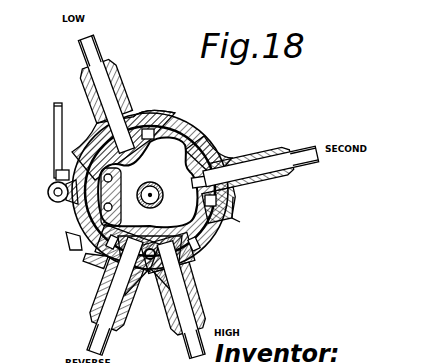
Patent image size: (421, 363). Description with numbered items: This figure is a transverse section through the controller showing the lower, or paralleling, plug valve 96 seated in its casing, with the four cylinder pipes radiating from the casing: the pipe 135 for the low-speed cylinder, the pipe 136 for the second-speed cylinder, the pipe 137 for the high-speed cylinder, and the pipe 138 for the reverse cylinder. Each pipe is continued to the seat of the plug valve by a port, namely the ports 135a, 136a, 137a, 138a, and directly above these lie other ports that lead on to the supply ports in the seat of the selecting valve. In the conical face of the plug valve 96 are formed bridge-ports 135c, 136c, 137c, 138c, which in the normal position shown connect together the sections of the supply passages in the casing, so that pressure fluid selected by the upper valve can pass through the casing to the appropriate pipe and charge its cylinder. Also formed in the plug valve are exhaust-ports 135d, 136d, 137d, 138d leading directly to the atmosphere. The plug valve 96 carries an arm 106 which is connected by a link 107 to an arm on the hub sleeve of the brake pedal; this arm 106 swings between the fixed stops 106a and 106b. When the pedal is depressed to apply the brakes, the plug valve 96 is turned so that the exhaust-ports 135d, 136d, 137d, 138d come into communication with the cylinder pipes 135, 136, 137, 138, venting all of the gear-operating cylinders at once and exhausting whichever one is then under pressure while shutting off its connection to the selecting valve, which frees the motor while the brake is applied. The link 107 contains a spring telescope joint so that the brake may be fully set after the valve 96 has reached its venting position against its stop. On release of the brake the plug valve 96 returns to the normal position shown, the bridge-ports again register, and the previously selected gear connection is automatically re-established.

The plug valve 96 is at (207, 135).
The arm 106 is at (63, 207).
The fixed stop 106a is at (63, 175).
The fixed stop 106b is at (75, 242).
The link 107 is at (53, 113).
The pipe 135 is at (96, 52).
The port 135a is at (110, 100).
The bridge-port 135c is at (147, 115).
The exhaust-port 135d is at (165, 118).
The pipe 136 is at (307, 155).
The port 136a is at (248, 188).
The bridge-port 136c is at (237, 200).
The exhaust-port 136d is at (233, 220).
The pipe 137 is at (197, 338).
The port 137a is at (205, 288).
The bridge-port 137c is at (210, 248).
The exhaust-port 137d is at (150, 260).
The pipe 138 is at (93, 338).
The port 138a is at (110, 303).
The bridge-port 138c is at (105, 282).
The exhaust-port 138d is at (100, 265).